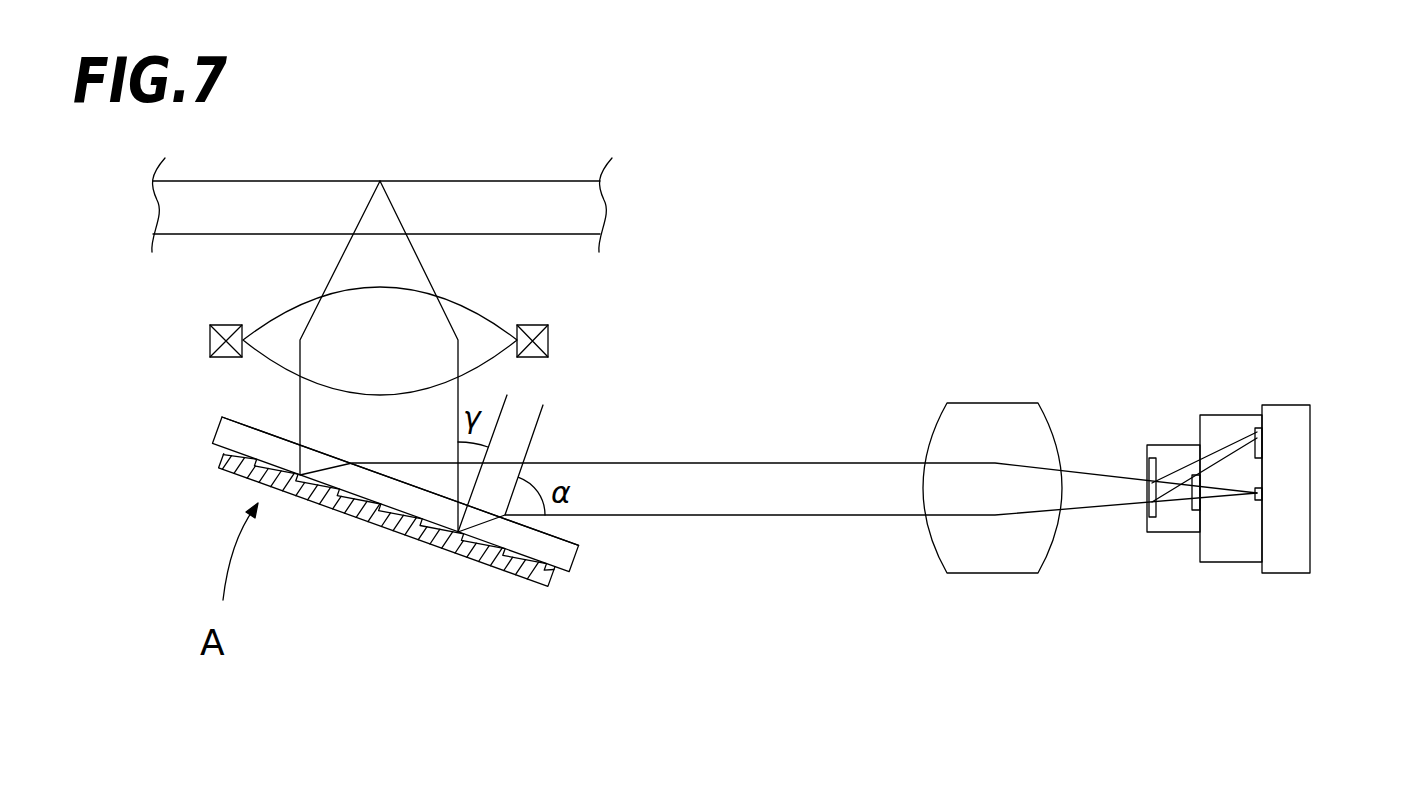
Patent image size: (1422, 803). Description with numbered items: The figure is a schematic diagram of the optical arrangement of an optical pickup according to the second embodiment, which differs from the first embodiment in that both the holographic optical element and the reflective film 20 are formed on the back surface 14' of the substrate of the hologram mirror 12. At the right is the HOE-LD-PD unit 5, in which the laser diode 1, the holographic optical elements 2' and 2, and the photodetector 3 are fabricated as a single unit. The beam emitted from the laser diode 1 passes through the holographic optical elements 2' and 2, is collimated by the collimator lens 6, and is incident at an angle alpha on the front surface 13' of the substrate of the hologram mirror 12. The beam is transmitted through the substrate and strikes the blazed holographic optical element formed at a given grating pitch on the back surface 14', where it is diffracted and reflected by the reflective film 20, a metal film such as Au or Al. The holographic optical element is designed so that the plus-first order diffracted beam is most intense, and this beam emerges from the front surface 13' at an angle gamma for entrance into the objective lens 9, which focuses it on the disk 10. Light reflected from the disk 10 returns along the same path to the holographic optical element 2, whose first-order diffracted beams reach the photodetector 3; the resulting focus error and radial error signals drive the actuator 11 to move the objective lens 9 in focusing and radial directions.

The laser diode 1 is at (1310, 488).
The holographic optical element 2 is at (1151, 432).
The holographic optical element 2' is at (1203, 570).
The photodetector 3 is at (1260, 417).
The HOE-LD-PD unit 5 is at (1181, 470).
The collimator lens 6 is at (990, 573).
The objective lens 9 is at (468, 313).
The disk 10 is at (477, 197).
The actuator 11 is at (548, 343).
The hologram mirror 12 is at (573, 558).
The front surface 13' is at (353, 460).
The back surface 14' is at (387, 581).
The reflective film 20 is at (382, 527).